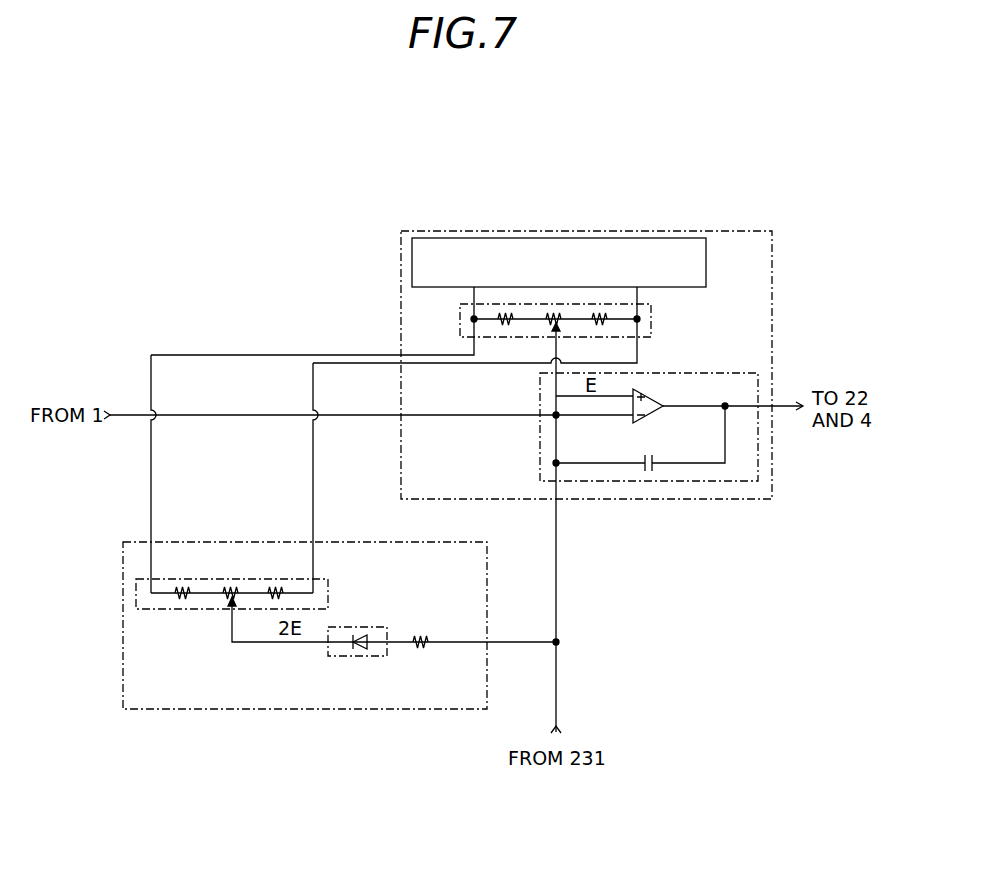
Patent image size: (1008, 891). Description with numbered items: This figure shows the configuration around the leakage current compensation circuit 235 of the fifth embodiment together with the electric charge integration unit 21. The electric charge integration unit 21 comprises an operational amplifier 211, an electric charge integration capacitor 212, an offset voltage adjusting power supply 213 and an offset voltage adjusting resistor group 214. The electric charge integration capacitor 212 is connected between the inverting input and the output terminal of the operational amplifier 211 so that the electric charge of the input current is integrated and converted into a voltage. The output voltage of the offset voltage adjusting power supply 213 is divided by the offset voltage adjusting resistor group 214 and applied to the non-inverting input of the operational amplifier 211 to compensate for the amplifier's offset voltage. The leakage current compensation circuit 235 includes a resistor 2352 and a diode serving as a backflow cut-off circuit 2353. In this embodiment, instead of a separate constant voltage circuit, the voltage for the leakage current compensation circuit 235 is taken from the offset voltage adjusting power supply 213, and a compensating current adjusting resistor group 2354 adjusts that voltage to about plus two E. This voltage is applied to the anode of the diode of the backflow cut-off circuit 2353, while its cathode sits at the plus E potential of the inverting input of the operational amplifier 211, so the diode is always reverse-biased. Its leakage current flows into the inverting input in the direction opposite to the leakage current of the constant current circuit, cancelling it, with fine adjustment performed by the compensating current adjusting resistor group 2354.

The electric charge integration unit 21 is at (816, 481).
The operational amplifier 211 is at (659, 412).
The electric charge integration capacitor 212 is at (660, 466).
The offset voltage adjusting power supply 213 is at (710, 266).
The offset voltage adjusting resistor group 214 is at (652, 313).
The leakage current compensation circuit 235 is at (166, 711).
The resistor 2352 is at (419, 650).
The backflow cut-off circuit 2353 is at (334, 657).
The compensating current adjusting resistor group 2354 is at (330, 586).